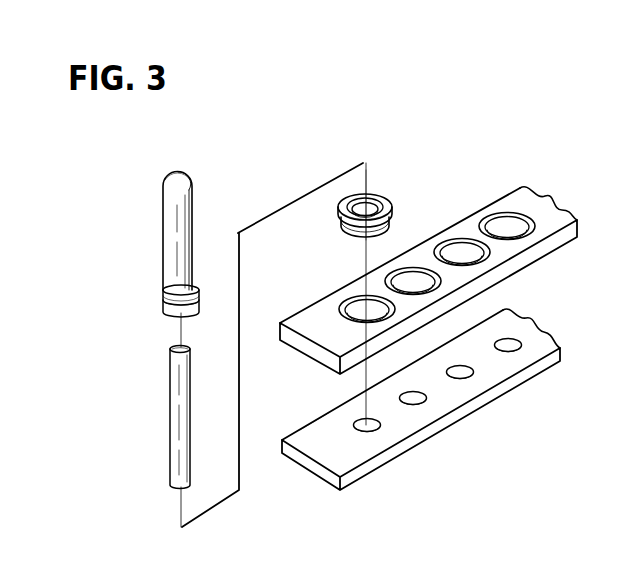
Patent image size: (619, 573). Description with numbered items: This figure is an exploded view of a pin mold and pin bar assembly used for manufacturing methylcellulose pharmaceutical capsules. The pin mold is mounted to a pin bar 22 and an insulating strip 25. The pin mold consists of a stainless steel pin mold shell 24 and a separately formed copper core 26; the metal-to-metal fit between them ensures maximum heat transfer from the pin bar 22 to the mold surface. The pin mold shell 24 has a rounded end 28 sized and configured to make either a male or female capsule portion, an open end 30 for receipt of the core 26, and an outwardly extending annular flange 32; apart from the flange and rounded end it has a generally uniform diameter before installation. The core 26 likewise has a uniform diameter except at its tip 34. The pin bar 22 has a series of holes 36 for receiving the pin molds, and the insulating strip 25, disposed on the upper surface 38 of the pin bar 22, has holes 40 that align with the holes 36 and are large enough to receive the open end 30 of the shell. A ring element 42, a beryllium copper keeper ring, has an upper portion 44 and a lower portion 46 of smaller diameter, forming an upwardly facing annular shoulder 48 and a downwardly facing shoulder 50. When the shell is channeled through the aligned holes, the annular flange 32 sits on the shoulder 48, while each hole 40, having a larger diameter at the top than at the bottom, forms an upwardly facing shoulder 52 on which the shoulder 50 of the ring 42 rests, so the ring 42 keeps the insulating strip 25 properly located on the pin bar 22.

The pin bar 22 is at (460, 411).
The pin mold shell 24 is at (163, 238).
The insulating strip 25 is at (548, 243).
The core 26 is at (170, 402).
The rounded end 28 is at (183, 173).
The open end 30 is at (187, 316).
The annular flange 32 is at (163, 296).
The tip 34 is at (173, 348).
The holes 36 is at (412, 406).
The upper surface 38 is at (342, 450).
The holes 40 is at (469, 234).
The ring element 42 is at (385, 158).
The upper portion 44 is at (392, 205).
The lower portion 46 is at (352, 228).
The upwardly facing annular shoulder 48 is at (354, 202).
The downwardly facing shoulder 50 is at (417, 283).
The upwardly facing shoulder 52 is at (510, 206).